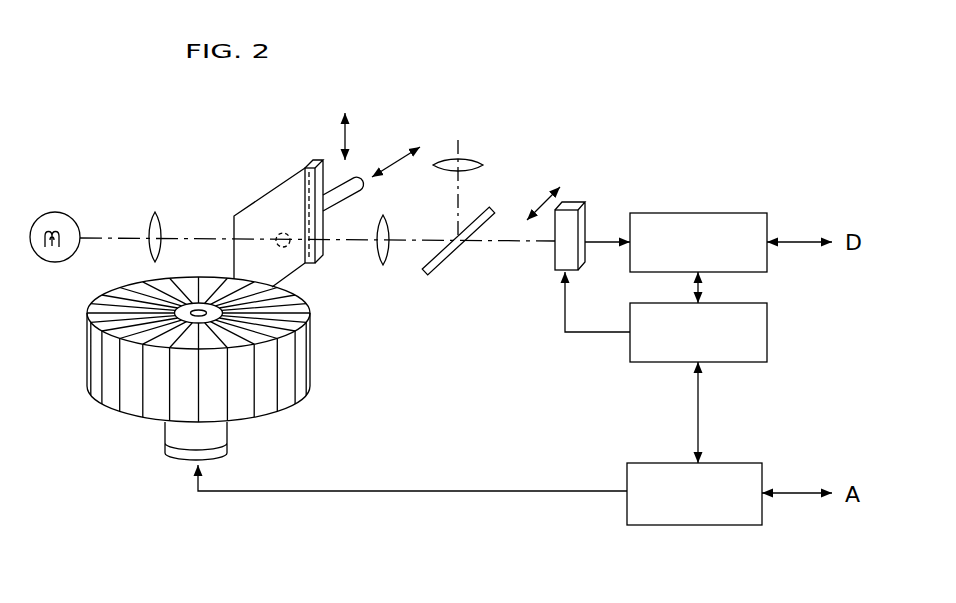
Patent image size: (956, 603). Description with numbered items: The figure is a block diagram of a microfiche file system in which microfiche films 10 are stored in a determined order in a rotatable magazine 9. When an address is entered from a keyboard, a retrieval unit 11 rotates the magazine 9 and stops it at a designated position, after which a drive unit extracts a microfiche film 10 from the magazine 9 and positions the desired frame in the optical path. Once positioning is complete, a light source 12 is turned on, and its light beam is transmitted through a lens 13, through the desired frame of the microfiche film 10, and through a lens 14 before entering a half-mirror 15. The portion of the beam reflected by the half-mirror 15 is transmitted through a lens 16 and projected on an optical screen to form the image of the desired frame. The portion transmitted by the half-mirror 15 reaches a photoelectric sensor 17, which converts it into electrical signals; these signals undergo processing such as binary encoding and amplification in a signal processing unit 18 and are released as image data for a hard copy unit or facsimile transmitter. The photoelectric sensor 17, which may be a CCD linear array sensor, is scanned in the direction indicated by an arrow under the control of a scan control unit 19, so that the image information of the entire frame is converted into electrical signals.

The magazine 9 is at (312, 340).
The microfiche film 10 is at (262, 197).
The retrieval unit 11 is at (725, 463).
The light source 12 is at (54, 211).
The lens 13 is at (162, 221).
The lens 14 is at (390, 226).
The half-mirror 15 is at (463, 252).
The lens 16 is at (466, 160).
The photoelectric sensor 17 is at (593, 218).
The signal processing unit 18 is at (720, 213).
The scan control unit 19 is at (733, 283).